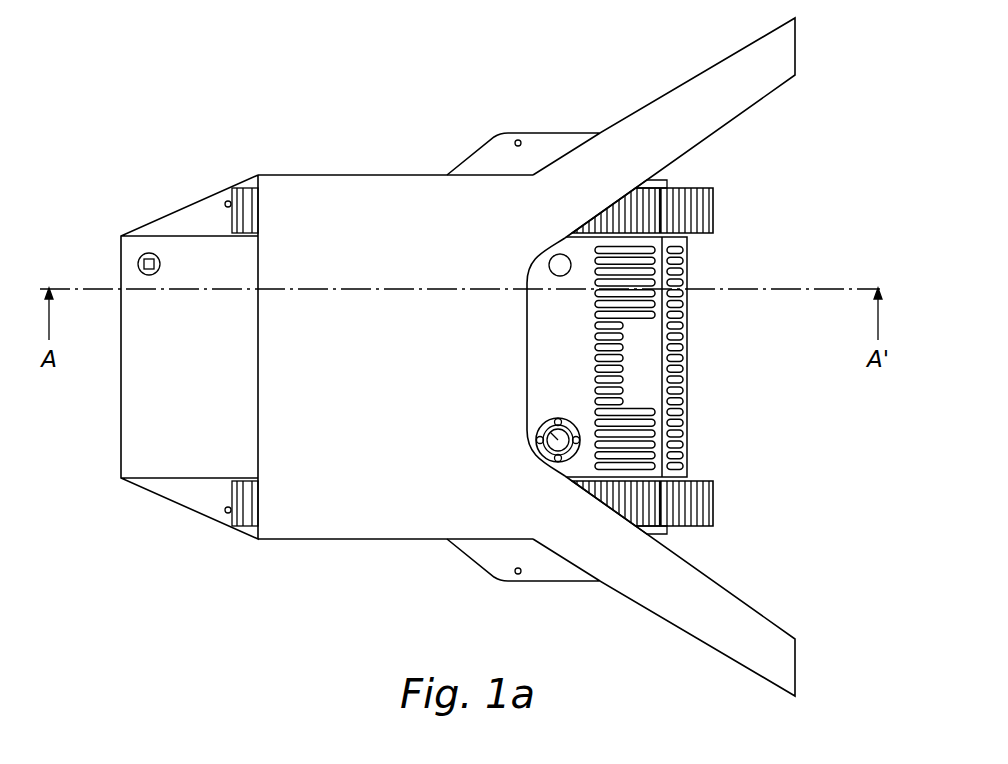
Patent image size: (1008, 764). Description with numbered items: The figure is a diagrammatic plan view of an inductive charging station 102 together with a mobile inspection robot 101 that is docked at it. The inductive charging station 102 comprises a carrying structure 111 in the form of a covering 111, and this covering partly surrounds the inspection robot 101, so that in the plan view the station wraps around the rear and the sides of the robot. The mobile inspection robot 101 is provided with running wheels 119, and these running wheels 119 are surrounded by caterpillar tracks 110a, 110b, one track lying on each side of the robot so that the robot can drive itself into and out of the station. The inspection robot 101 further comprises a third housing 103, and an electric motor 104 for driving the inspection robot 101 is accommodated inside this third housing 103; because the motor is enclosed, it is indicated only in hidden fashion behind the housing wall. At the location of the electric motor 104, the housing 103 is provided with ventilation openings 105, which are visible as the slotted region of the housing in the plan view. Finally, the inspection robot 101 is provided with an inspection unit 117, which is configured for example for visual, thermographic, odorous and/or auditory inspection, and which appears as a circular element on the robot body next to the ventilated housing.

The mobile inspection robot 101 is at (563, 338).
The inductive charging station 102 is at (188, 270).
The third housing 103 is at (635, 335).
The electric motor 104 is at (635, 370).
The ventilation openings 105 is at (648, 423).
The caterpillar track 110a is at (248, 230).
The caterpillar track 110b is at (238, 527).
The carrying structure 111 is at (386, 230).
The inspection unit 117 is at (538, 432).
The running wheels 119 is at (668, 180).